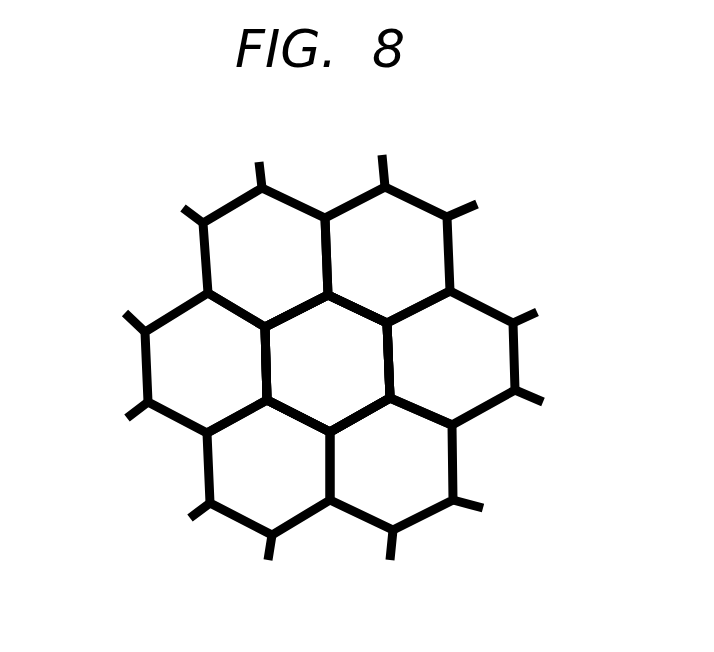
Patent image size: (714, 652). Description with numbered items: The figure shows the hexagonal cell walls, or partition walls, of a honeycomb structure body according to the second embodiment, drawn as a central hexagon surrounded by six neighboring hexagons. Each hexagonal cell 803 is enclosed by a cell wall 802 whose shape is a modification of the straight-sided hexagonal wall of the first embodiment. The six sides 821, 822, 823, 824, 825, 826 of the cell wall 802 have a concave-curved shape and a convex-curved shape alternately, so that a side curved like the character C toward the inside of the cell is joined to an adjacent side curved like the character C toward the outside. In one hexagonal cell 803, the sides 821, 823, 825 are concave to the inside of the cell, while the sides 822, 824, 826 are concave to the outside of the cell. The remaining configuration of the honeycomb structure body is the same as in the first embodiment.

The cell wall 802 is at (283, 319).
The hexagonal cell 803 is at (362, 228).
The side 821 is at (390, 363).
The side 822 is at (367, 303).
The side 823 is at (300, 307).
The side 824 is at (258, 358).
The side 825 is at (287, 410).
The side 826 is at (380, 412).